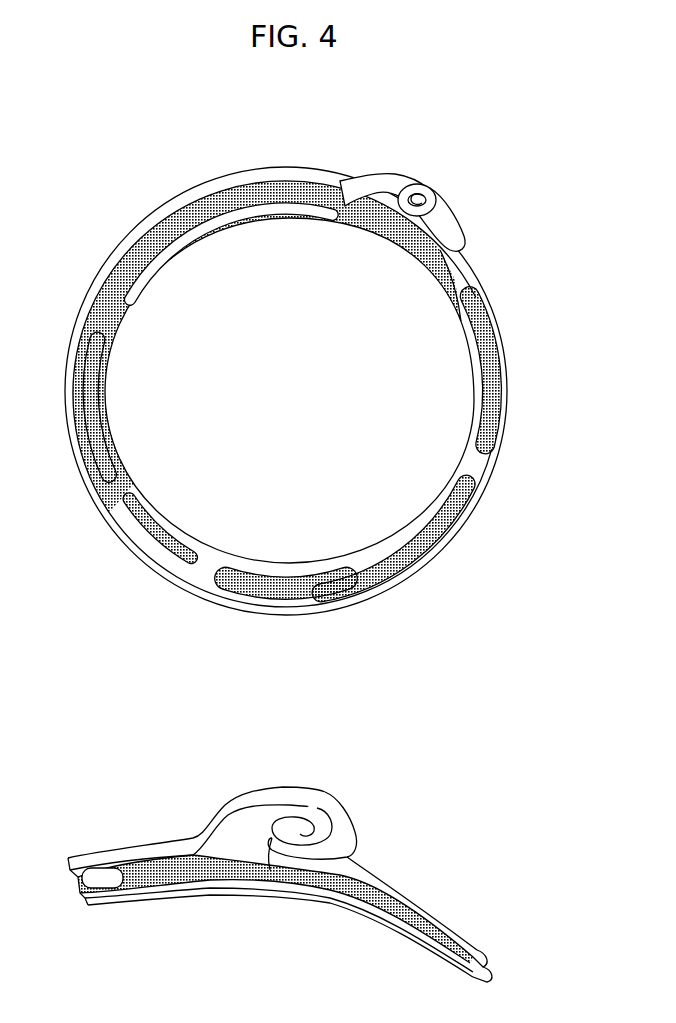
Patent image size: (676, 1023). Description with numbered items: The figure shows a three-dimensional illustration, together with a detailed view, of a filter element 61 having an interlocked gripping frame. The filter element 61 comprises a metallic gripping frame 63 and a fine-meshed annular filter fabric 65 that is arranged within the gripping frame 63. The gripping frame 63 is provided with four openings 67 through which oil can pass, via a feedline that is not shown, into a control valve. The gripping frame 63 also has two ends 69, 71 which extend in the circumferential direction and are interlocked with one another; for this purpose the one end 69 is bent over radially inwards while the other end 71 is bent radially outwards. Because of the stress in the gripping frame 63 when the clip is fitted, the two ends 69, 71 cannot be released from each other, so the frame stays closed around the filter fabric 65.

The filter element 61 is at (358, 140).
The gripping frame 63 is at (478, 468).
The filter fabric 65 is at (394, 588).
The openings 67 is at (326, 594).
The end 69 is at (432, 186).
The end 71 is at (401, 178).